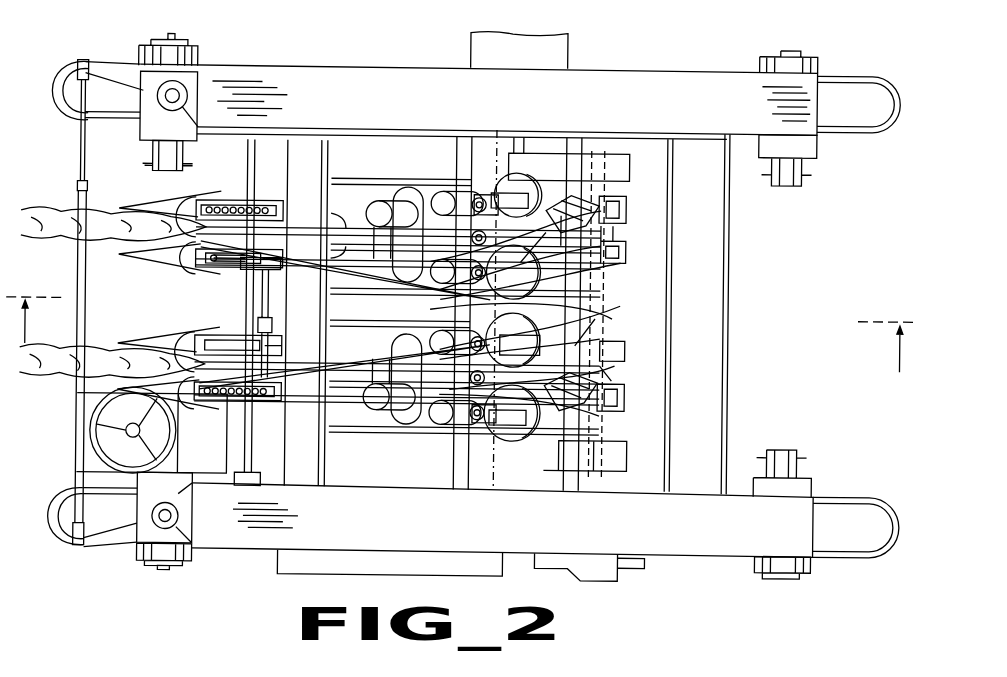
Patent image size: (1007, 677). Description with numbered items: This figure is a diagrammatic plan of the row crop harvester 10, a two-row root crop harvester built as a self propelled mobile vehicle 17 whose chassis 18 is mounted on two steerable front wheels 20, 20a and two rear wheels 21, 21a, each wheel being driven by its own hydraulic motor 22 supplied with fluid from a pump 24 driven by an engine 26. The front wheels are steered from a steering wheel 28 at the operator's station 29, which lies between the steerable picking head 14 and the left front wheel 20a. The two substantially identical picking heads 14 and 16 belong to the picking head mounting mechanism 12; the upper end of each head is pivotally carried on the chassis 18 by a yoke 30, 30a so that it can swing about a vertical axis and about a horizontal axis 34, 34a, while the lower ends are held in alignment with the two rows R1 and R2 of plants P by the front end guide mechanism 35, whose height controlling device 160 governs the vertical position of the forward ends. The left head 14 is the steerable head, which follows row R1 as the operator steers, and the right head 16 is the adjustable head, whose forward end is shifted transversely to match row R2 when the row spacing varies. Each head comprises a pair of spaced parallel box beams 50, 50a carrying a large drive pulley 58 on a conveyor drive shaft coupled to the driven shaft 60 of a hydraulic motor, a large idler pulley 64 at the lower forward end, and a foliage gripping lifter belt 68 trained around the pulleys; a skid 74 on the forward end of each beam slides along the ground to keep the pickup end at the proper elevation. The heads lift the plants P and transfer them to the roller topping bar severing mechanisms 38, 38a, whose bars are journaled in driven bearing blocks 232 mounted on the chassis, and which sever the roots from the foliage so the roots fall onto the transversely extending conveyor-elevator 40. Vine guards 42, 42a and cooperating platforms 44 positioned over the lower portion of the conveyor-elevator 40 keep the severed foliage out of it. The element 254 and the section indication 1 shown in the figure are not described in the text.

The row crop harvester 10 is at (650, 62).
The picking head mounting mechanism 12 is at (480, 172).
The steerable picking head 14 is at (155, 342).
The adjustable picking head 16 is at (145, 200).
The self propelled mobile vehicle 17 is at (250, 66).
The chassis 18 is at (684, 78).
The front wheel 20 is at (68, 64).
The left front wheel 20a is at (62, 538).
The rear wheel 21 is at (868, 130).
The left rear wheel 21a is at (864, 546).
The hydraulic motor 22 is at (150, 149).
The pump 24 is at (607, 580).
The engine 26 is at (283, 566).
The steering wheel 28 is at (92, 434).
The operator's station 29 is at (214, 444).
The yoke 30 is at (462, 182).
The yoke 30a is at (458, 437).
The horizontal axis 34 is at (495, 130).
The horizontal axis 34a is at (495, 477).
The front end guide mechanism 35 is at (258, 318).
The severing mechanism 38 is at (598, 206).
The severing mechanism 38a is at (610, 407).
The conveyor-elevator 40 is at (468, 47).
The vine guard 42 is at (606, 309).
The vine guard 42a is at (596, 337).
The platform 44 is at (610, 168).
The box beam 50 is at (334, 262).
The box beam 50a is at (334, 396).
The drive pulley 58 is at (515, 185).
The driven shaft 60 is at (440, 192).
The idler pulley 64 is at (212, 200).
The lifter belt 68 is at (280, 183).
The skid 74 is at (128, 258).
The height controlling device 160 is at (215, 263).
The driven bearing block 232 is at (600, 239).
The actuator cylinder 254 is at (375, 200).
The plants P is at (52, 236).
The row R1 is at (47, 385).
The row R2 is at (46, 215).
The section line 1- 1 is at (461, 321).